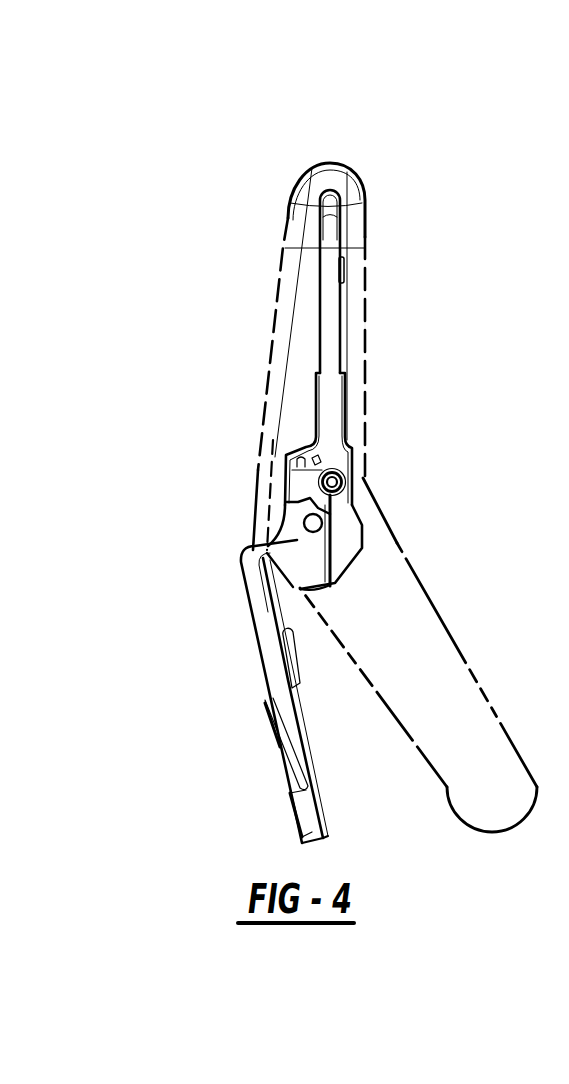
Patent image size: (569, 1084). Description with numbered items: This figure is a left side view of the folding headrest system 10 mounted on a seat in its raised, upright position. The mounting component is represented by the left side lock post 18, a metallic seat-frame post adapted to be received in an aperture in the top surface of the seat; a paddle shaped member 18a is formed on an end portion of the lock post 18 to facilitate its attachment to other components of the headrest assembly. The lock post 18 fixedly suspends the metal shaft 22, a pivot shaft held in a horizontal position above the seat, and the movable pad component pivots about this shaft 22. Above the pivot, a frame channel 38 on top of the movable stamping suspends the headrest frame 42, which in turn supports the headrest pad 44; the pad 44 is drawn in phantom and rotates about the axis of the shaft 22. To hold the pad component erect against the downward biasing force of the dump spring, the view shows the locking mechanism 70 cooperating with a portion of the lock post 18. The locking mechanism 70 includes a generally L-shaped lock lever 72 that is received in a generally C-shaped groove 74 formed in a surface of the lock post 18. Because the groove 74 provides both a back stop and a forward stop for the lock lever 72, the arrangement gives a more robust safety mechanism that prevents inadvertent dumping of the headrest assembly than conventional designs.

The folding headrest system 10 is at (393, 168).
The headrest pad 44 is at (352, 323).
The headrest frame 42 is at (312, 333).
The frame channel 38 is at (307, 422).
The locking mechanism 70 is at (248, 470).
The lock lever 72 is at (297, 497).
The groove 74 is at (291, 515).
The shaft 22 is at (318, 524).
The left side lock post 18 is at (257, 645).
The paddle shaped member 18a is at (297, 538).